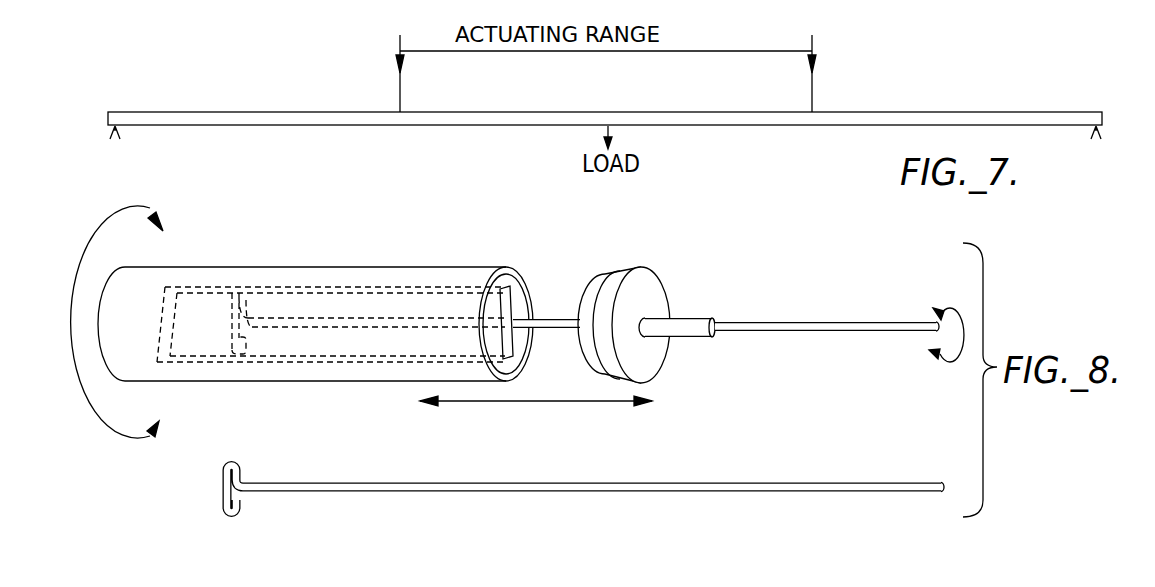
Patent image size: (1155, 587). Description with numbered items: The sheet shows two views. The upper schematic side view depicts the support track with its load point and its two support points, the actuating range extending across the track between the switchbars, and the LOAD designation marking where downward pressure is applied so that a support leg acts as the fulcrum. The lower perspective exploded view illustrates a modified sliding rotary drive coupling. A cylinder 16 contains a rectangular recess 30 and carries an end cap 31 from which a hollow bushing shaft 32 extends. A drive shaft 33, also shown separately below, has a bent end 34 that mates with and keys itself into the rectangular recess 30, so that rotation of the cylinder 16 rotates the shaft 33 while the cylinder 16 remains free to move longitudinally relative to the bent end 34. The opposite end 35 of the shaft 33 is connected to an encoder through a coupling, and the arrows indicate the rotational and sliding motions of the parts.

The cylinder 16 is at (267, 382).
The rectangular recess 30 is at (517, 278).
The end cap 31 is at (648, 297).
The hollow bushing shaft 32 is at (688, 323).
The drive shaft 33 is at (860, 322).
The bent end 34 is at (218, 481).
The opposite end 35 is at (918, 335).